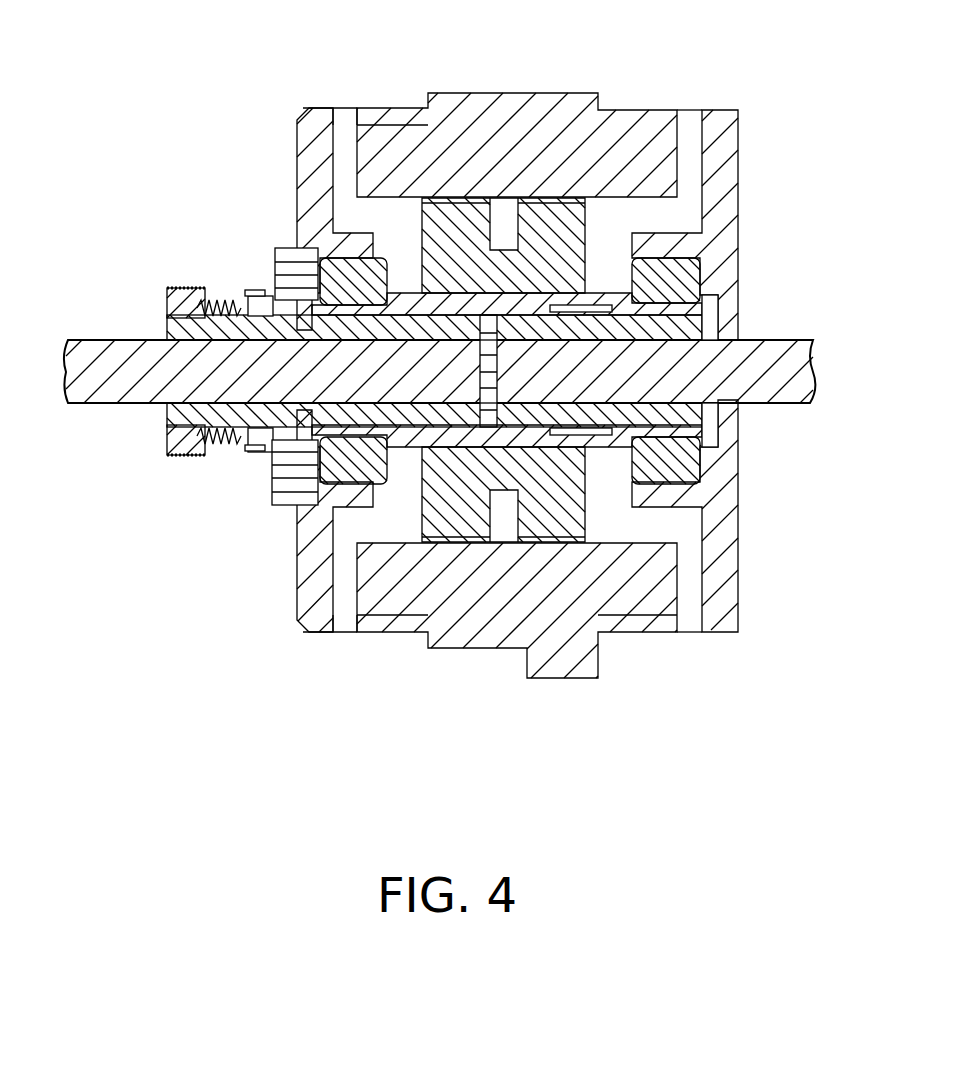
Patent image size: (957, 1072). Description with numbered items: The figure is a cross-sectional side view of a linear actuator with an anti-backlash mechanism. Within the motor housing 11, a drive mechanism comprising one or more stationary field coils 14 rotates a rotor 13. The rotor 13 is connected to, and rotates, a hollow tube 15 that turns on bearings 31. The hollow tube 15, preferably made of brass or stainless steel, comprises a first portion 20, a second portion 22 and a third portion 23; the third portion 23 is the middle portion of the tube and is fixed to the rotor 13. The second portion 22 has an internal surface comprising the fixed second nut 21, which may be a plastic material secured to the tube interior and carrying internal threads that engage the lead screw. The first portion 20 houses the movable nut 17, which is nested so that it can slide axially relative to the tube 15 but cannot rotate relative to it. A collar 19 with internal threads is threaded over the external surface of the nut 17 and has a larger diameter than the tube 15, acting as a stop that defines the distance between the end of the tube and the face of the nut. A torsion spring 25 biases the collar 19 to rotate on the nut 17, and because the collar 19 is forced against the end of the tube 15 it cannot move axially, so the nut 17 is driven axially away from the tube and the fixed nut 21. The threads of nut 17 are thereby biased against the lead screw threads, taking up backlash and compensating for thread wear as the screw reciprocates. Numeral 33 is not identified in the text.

The motor housing 11 is at (296, 106).
The rotor 13 is at (560, 190).
The stationary field coils 14 is at (509, 93).
The hollow tube 15 is at (597, 312).
The movable nut 17 is at (182, 315).
The collar 19 is at (257, 453).
The first portion 20 is at (402, 440).
The second nut 21 is at (640, 326).
The second portion 22 is at (610, 455).
The third portion 23 is at (585, 470).
The torsion spring 25 is at (222, 298).
The bearings 31 is at (675, 262).
The lower sleeve 33 is at (676, 414).